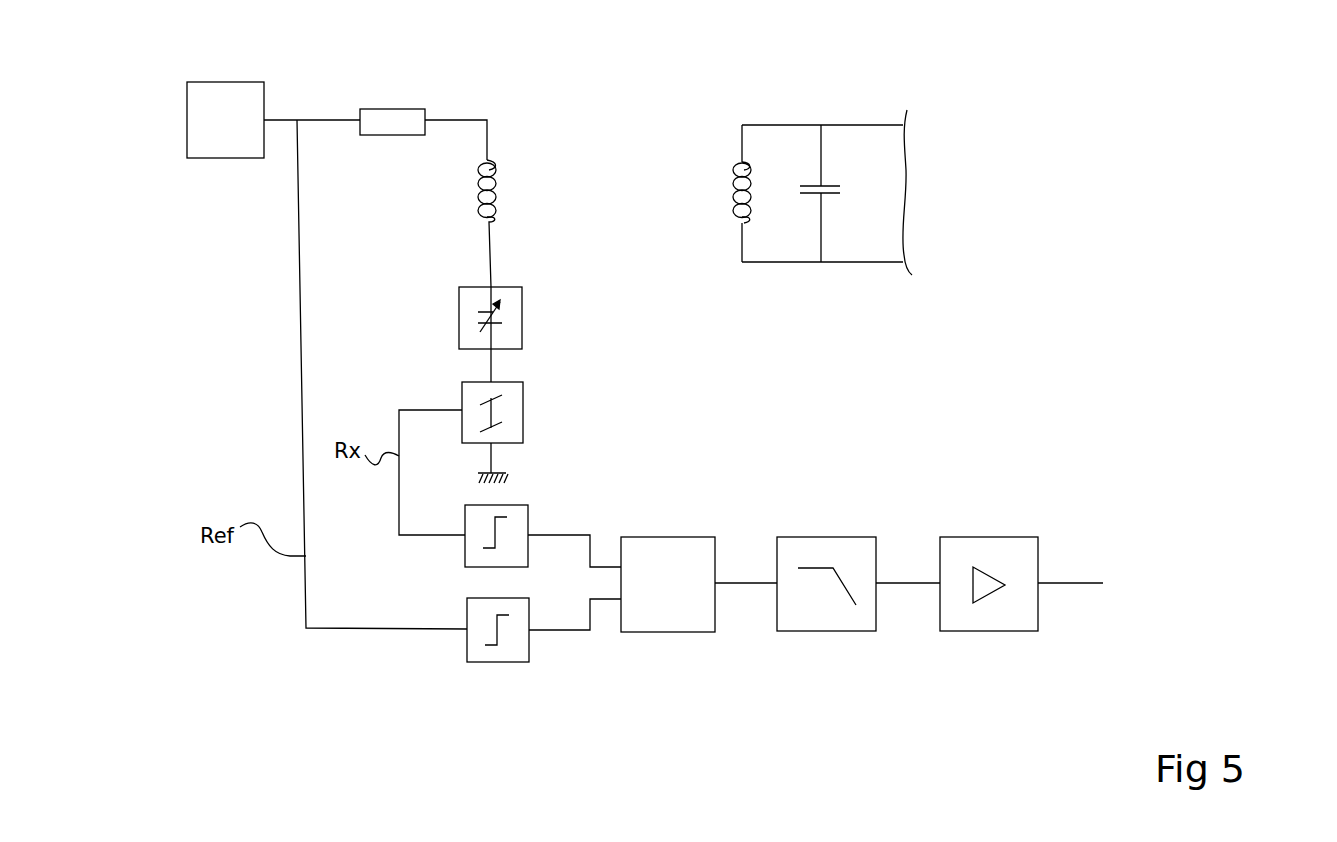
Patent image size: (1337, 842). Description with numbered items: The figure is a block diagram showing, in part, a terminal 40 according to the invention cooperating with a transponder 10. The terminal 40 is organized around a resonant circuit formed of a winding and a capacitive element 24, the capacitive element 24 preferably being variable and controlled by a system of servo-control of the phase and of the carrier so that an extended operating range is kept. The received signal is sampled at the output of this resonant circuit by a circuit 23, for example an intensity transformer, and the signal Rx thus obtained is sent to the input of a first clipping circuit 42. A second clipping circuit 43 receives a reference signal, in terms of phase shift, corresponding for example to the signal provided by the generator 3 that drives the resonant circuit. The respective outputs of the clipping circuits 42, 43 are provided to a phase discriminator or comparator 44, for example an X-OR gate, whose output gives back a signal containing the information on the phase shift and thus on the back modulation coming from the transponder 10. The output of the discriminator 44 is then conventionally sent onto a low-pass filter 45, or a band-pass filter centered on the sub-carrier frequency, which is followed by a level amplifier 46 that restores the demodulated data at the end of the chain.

The generator 3 is at (225, 82).
The transponder 10 is at (824, 112).
The terminal 40 is at (522, 111).
The circuit 23 is at (523, 395).
The capacitive element 24 is at (522, 294).
The first clipping circuit 42 is at (530, 512).
The second clipping circuit 43 is at (510, 662).
The phase discriminator 44 is at (668, 537).
The low-pass filter 45 is at (822, 537).
The level amplifier 46 is at (978, 537).